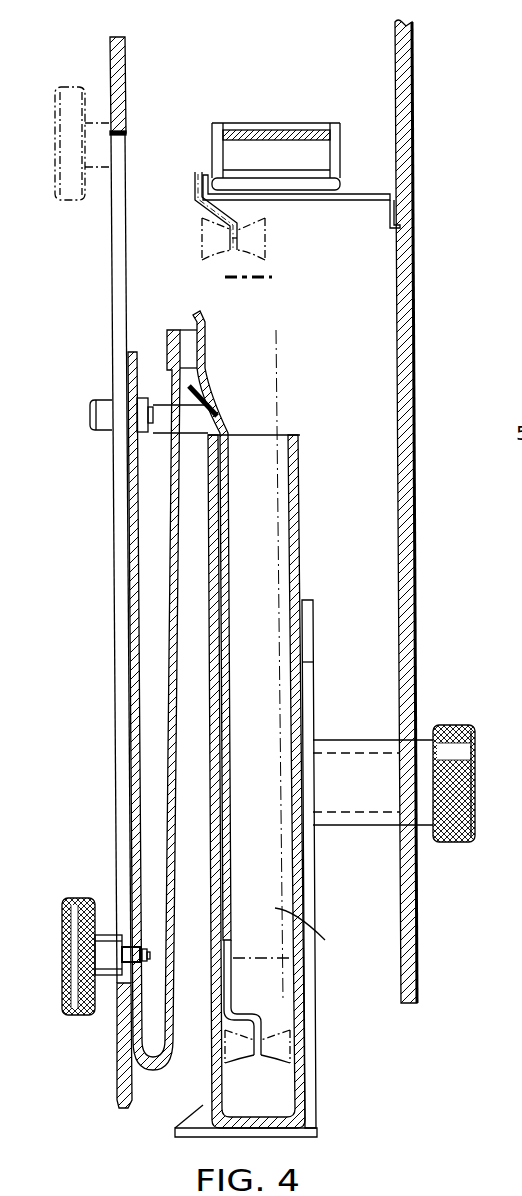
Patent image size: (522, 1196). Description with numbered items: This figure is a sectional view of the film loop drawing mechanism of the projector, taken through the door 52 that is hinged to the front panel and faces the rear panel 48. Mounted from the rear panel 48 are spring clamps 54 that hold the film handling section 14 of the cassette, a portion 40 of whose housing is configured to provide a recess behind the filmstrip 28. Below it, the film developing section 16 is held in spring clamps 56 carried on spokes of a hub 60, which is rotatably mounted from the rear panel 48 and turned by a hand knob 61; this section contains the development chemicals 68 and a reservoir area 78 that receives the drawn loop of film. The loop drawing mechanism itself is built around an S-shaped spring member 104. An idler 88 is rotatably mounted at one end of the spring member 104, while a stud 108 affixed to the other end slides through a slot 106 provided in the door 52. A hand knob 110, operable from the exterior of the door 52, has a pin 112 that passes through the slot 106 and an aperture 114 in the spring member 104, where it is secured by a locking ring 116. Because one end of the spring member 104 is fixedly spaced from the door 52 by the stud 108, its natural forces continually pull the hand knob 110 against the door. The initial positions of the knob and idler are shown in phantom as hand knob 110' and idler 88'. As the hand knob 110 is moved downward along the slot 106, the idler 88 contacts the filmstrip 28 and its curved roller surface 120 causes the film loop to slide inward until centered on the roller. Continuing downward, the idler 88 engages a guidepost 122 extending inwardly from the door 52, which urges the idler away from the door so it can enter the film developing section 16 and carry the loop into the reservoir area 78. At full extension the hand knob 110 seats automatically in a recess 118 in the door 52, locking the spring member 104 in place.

The film handling section 14 is at (338, 162).
The film developing section 16 is at (300, 553).
The filmstrip 28 is at (311, 932).
The portion of the housing 40 is at (250, 135).
The rear panel 48 is at (405, 500).
The door 52 is at (117, 1060).
The spring clamps 54 is at (368, 199).
The spring clamps 56 is at (177, 1130).
The hub 60 is at (312, 715).
The hand knob 61 is at (470, 752).
The development chemicals 68 is at (265, 1007).
The reservoir area 78 is at (272, 1105).
The idler 88 is at (282, 1001).
The idler (initial phantom position) 88' is at (273, 255).
The S-shaped spring member 104 is at (200, 216).
The slot 106 is at (116, 632).
The stud 108 is at (115, 433).
The hand knob 110 is at (72, 929).
The hand knob (initial phantom position) 110' is at (82, 166).
The pin 112 is at (147, 960).
The aperture 114 is at (122, 947).
The locking ring 116 is at (145, 965).
The recess 118 is at (115, 992).
The curved roller surface 120 is at (278, 1067).
The guidepost 122 is at (228, 410).